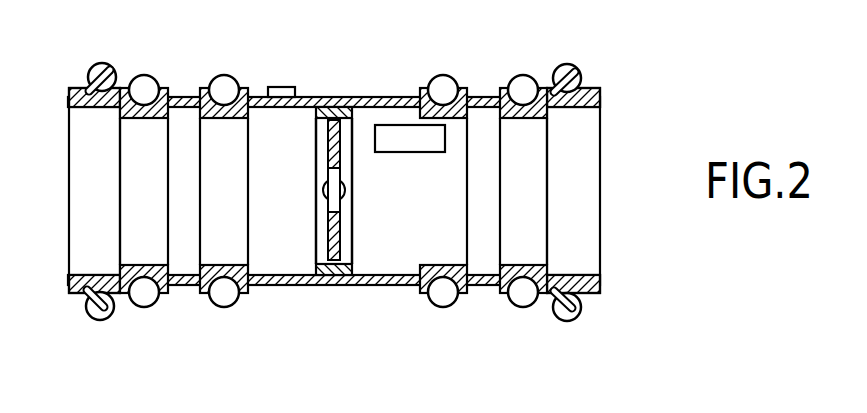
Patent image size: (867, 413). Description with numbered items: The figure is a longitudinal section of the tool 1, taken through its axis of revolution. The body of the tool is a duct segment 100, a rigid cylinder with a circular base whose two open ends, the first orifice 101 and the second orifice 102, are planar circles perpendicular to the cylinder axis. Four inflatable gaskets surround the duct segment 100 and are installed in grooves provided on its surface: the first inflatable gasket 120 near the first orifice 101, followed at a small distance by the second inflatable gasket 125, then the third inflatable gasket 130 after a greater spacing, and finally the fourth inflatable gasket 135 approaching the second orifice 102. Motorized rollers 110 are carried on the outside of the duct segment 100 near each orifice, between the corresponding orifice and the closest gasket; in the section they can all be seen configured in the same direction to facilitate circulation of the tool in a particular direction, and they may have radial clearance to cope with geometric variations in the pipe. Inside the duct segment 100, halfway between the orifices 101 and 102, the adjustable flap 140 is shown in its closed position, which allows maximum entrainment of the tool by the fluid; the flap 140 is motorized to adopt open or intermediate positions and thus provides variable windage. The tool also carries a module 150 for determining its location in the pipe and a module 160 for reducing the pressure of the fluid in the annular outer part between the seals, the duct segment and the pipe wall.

The tool 1 is at (636, 84).
The duct segment 100 is at (282, 286).
The first orifice 101 is at (78, 187).
The second orifice 102 is at (587, 178).
The motorized rollers 110 is at (104, 63).
The first inflatable gasket 120 is at (145, 76).
The second inflatable gasket 125 is at (225, 76).
The third inflatable gasket 130 is at (443, 76).
The fourth inflatable gasket 135 is at (524, 76).
The adjustable flap 140 is at (327, 148).
The module for determining the location of the tool 150 is at (413, 143).
The module for reducing the pressure of the fluid 160 is at (285, 87).